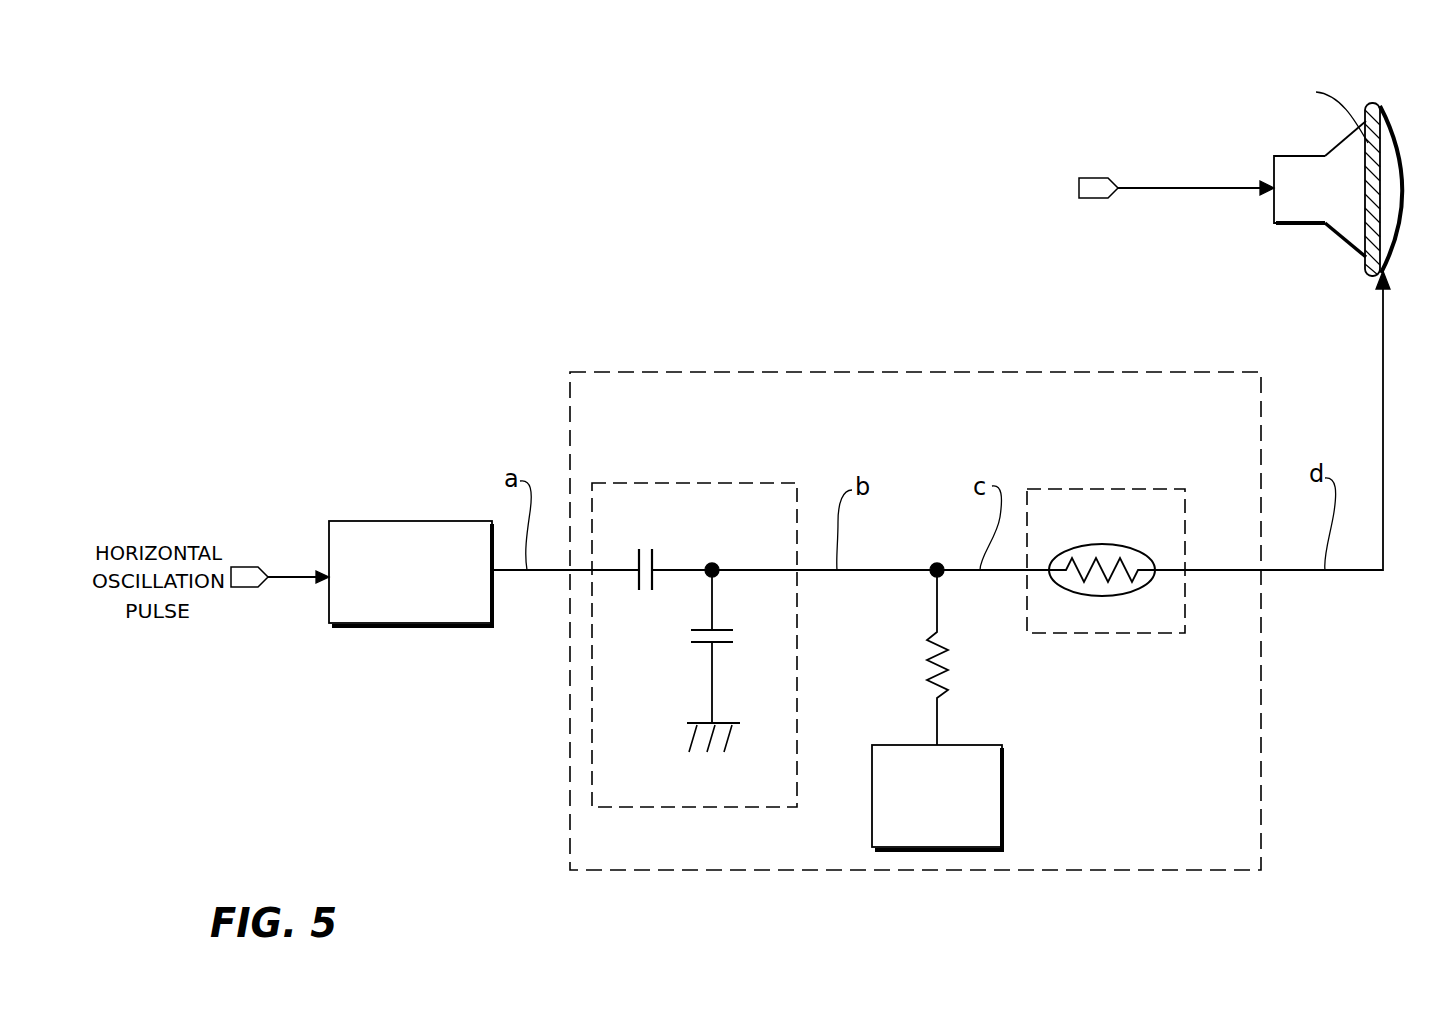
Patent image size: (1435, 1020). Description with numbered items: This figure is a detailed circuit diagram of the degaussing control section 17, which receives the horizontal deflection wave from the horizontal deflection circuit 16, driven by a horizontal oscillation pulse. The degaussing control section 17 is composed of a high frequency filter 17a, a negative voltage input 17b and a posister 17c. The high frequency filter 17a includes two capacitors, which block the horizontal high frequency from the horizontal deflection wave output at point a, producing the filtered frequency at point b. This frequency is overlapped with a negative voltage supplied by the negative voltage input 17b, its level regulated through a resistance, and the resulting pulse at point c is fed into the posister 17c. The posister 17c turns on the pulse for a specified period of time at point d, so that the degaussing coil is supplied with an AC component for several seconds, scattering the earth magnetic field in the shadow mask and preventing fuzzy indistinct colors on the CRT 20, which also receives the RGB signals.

The horizontal deflection circuit 16 is at (363, 521).
The degaussing control section 17 is at (957, 372).
The high frequency filter 17a is at (717, 483).
The negative voltage input 17b is at (980, 745).
The posister 17c is at (1062, 489).
The CRT 20 is at (1400, 256).